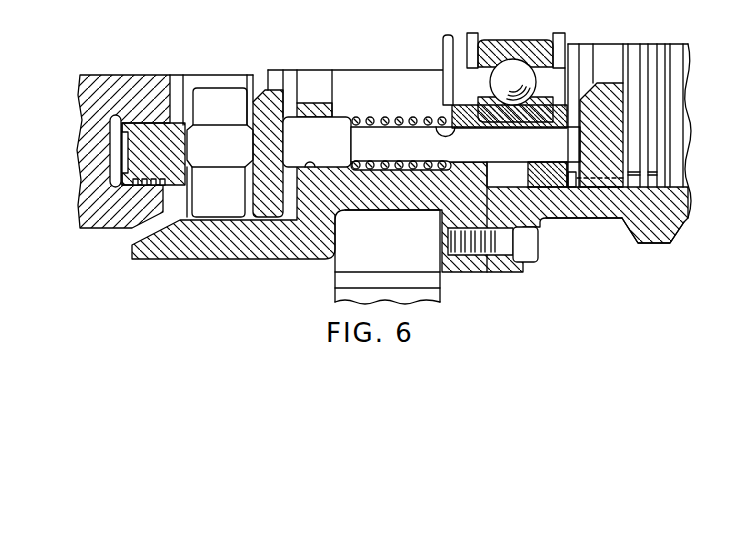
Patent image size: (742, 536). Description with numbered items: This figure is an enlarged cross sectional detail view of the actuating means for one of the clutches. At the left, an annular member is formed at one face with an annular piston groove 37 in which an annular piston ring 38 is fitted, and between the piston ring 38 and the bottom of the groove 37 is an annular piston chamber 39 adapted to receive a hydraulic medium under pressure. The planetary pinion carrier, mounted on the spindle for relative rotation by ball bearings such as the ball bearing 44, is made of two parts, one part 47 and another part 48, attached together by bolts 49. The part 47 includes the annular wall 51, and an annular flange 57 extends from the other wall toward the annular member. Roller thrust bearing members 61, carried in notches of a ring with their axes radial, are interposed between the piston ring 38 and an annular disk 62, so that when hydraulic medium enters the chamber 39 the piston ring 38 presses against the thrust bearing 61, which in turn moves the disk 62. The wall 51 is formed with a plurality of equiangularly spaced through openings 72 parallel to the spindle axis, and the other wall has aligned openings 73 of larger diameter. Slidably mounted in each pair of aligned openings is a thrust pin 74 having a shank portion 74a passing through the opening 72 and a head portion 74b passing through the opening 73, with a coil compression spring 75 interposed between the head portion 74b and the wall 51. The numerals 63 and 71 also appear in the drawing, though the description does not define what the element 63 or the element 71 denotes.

The annular piston groove 37 is at (140, 128).
The annular piston ring 38 is at (140, 147).
The annular piston chamber 39 is at (113, 117).
The ball bearing 44 is at (510, 72).
The carrier part 47 is at (470, 276).
The carrier part 48 is at (558, 227).
The bolts 49 is at (504, 248).
The annular wall 51 is at (468, 102).
The annular flange 57 is at (185, 243).
The roller thrust bearing member 61 is at (223, 138).
The annular disk 62 is at (263, 213).
The projection 63 is at (605, 203).
The block 71 is at (606, 92).
The through openings 72 is at (433, 130).
The openings 73 is at (311, 168).
The thrust pin 74 is at (392, 103).
The shank portion 74a is at (516, 156).
The head portion 74b is at (322, 154).
The coil compression spring 75 is at (353, 117).